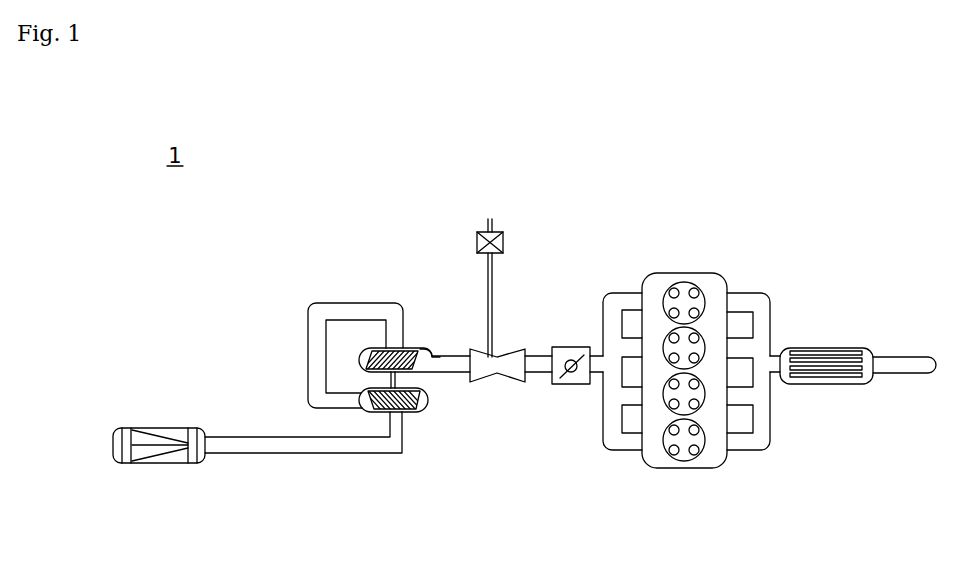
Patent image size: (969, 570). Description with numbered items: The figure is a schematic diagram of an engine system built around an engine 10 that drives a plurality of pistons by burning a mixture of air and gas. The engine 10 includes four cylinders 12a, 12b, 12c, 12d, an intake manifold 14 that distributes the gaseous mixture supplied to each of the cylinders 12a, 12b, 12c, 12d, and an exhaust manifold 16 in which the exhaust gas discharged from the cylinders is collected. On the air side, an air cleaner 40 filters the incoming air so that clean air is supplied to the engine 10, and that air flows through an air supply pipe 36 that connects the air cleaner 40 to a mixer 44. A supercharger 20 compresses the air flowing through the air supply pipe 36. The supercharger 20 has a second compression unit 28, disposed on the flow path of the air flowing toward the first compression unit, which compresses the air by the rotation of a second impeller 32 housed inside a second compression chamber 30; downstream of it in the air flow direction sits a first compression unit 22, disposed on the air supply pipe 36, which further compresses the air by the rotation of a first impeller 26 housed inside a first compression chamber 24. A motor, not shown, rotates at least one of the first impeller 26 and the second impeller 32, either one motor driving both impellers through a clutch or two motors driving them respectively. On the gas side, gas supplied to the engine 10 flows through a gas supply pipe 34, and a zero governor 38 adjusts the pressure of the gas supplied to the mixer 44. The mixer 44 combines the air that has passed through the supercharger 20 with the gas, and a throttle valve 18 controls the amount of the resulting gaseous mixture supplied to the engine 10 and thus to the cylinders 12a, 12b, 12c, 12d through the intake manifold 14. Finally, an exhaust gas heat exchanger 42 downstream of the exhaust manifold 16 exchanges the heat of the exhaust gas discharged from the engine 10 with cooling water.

The engine 10 is at (712, 290).
The cylinder 12a is at (683, 292).
The cylinder 12b is at (695, 333).
The cylinder 12c is at (702, 395).
The cylinder 12d is at (687, 460).
The intake manifold 14 is at (623, 440).
The exhaust manifold 16 is at (752, 441).
The throttle valve 18 is at (575, 385).
The supercharger 20 is at (420, 460).
The first compression unit 22 is at (370, 345).
The first compression chamber 24 is at (380, 348).
The first impeller 26 is at (403, 353).
The second compression unit 28 is at (372, 417).
The second compression chamber 30 is at (410, 410).
The second impeller 32 is at (397, 411).
The gas supply pipe 34 is at (493, 285).
The air supply pipe 36 is at (274, 454).
The zero governor 38 is at (497, 233).
The air cleaner 40 is at (180, 463).
The exhaust gas heat exchanger 42 is at (823, 353).
The mixer 44 is at (495, 368).